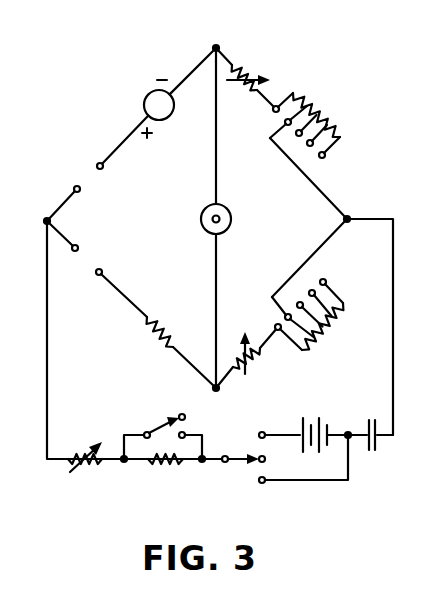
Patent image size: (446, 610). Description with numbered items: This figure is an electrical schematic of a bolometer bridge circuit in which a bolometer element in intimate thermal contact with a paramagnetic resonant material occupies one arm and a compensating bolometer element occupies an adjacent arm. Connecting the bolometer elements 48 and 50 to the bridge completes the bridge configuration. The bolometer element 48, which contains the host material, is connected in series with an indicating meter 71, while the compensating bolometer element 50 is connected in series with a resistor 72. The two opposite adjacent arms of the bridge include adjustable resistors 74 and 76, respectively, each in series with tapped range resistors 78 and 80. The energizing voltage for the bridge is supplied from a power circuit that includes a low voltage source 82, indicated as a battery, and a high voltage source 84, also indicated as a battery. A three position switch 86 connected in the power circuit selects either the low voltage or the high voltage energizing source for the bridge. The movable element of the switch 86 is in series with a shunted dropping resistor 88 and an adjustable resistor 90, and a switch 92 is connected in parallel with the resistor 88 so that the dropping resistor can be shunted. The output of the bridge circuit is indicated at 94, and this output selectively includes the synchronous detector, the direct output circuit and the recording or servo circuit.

The bolometer element 48 is at (86, 170).
The compensating bolometer element 50 is at (82, 272).
The indicating meter 71 is at (143, 100).
The resistor 72 is at (154, 333).
The adjustable resistor 74 is at (247, 70).
The adjustable resistor 76 is at (253, 355).
The tapped range resistor 78 is at (328, 118).
The tapped range resistor 80 is at (325, 330).
The low voltage source 82 is at (373, 452).
The high voltage source 84 is at (322, 430).
The three position switch 86 is at (246, 468).
The shunted dropping resistor 88 is at (170, 463).
The adjustable resistor 90 is at (76, 448).
The switch 92 is at (163, 424).
The output of the bridge circuit 94 is at (204, 209).